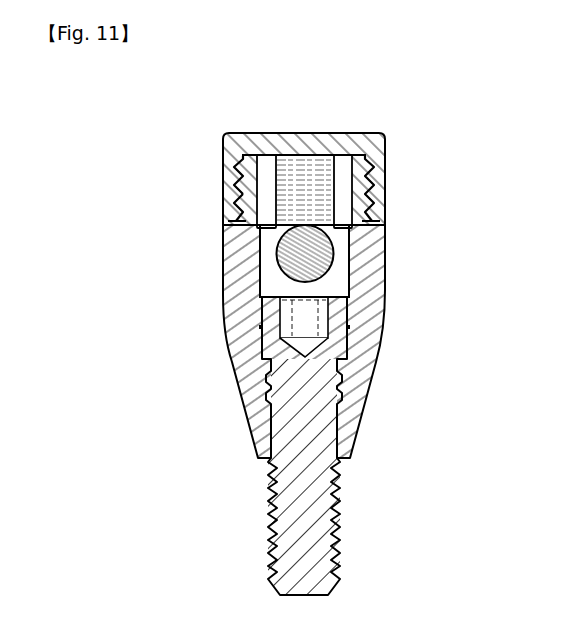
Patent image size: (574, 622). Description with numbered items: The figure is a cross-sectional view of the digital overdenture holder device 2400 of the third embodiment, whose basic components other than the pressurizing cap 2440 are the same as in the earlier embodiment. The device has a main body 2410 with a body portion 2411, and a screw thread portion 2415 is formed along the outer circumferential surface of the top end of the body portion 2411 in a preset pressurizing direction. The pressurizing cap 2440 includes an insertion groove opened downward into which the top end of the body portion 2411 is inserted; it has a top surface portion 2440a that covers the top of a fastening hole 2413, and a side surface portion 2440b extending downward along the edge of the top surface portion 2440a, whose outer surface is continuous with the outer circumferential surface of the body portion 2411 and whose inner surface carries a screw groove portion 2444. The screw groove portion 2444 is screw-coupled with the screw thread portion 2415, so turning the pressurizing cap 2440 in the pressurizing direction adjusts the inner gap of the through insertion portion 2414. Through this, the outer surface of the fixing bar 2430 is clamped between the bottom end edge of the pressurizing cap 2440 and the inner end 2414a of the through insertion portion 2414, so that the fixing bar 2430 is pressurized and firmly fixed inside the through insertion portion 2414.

The implant assembly 2400 is at (176, 123).
The fixture body 2410 is at (385, 297).
The body portion 2411 is at (375, 258).
The fastening hole 2413 is at (343, 437).
The through insertion portion 2414 is at (350, 236).
The inner end of the through insertion portion 2414a is at (303, 284).
The screw thread portion 2415 is at (377, 195).
The fixing bar 2430 is at (276, 252).
The pressurizing cap 2440 is at (385, 167).
The top surface portion 2440a is at (312, 142).
The side surface portion 2440b is at (232, 182).
The screw groove portion 2444 is at (233, 200).